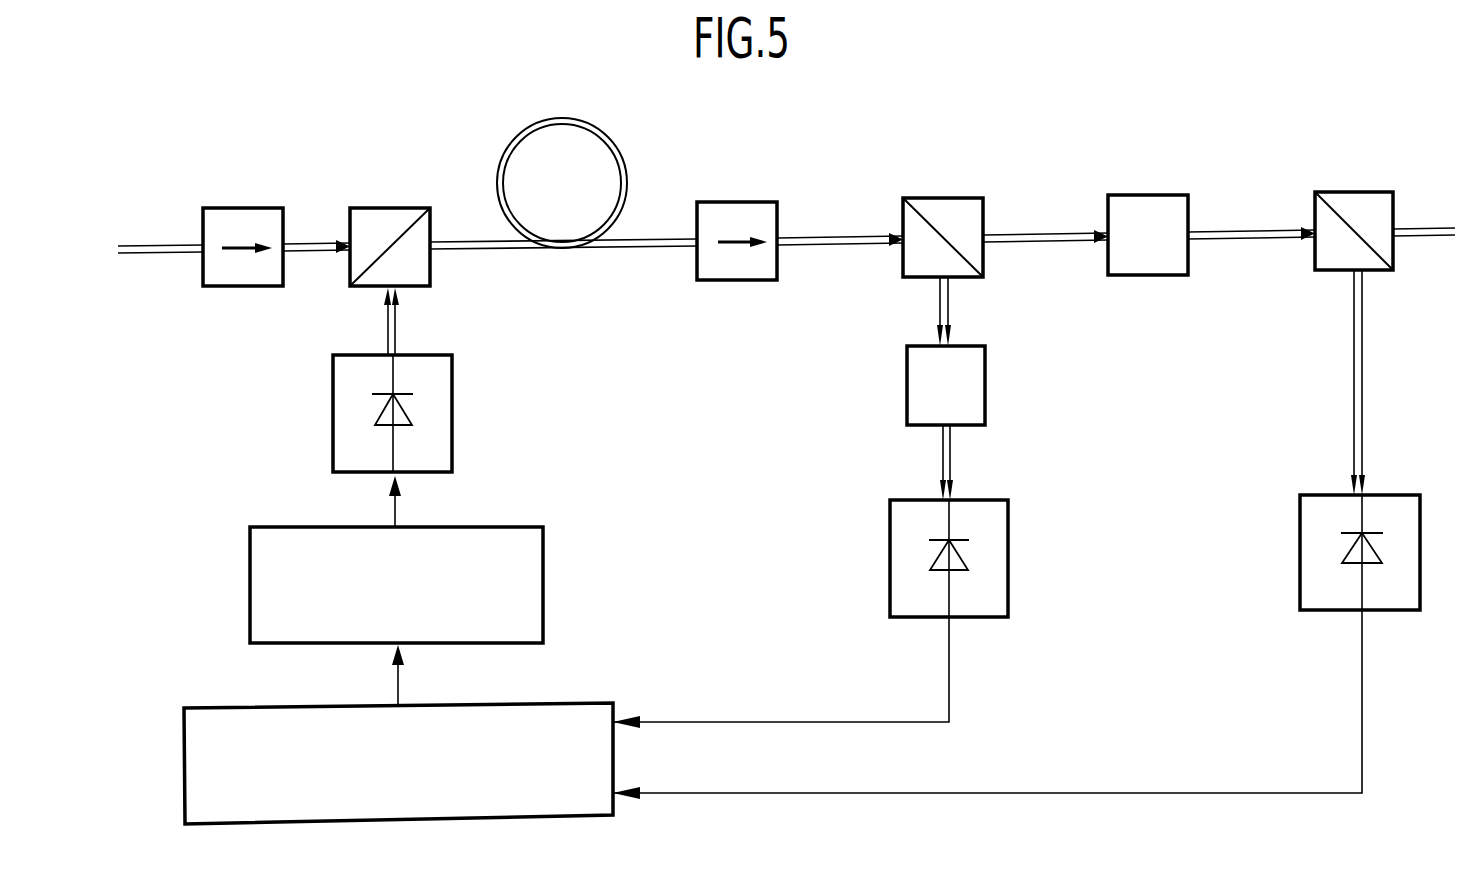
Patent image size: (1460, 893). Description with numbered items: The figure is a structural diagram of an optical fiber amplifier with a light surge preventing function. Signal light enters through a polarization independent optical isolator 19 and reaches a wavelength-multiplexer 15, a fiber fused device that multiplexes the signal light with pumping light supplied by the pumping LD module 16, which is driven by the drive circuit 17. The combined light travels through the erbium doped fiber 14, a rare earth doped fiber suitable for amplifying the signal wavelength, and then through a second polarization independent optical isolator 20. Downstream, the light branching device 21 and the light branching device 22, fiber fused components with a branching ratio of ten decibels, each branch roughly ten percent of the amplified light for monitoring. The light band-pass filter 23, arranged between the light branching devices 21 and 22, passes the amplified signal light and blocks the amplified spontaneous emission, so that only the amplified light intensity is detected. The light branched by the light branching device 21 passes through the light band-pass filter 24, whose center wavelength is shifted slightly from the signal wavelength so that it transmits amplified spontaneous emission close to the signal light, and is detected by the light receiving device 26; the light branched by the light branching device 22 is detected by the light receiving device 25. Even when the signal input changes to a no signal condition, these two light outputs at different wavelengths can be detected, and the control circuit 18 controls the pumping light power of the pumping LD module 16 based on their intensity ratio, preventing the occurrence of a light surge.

The erbium doped fiber 14 is at (518, 135).
The wavelength-multiplexer 15 is at (360, 208).
The pumping LD module 16 is at (452, 418).
The drive circuit 17 is at (543, 605).
The control circuit 18 is at (578, 704).
The polarization independent optical isolator 19 is at (213, 208).
The polarization independent optical isolator 20 is at (703, 202).
The light branching device 21 is at (917, 198).
The light branching device 22 is at (1327, 192).
The light band-pass filter 23 is at (1122, 195).
The light band-pass filter 24 is at (985, 412).
The light receiving device 25 is at (1300, 594).
The light receiving device 26 is at (1008, 598).